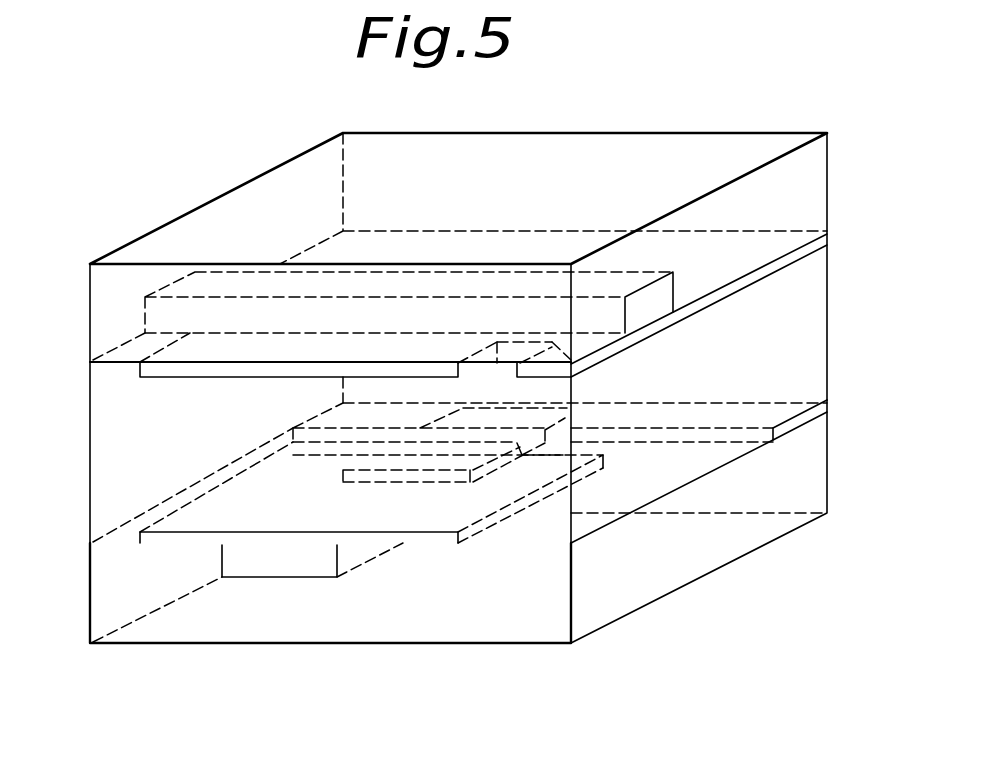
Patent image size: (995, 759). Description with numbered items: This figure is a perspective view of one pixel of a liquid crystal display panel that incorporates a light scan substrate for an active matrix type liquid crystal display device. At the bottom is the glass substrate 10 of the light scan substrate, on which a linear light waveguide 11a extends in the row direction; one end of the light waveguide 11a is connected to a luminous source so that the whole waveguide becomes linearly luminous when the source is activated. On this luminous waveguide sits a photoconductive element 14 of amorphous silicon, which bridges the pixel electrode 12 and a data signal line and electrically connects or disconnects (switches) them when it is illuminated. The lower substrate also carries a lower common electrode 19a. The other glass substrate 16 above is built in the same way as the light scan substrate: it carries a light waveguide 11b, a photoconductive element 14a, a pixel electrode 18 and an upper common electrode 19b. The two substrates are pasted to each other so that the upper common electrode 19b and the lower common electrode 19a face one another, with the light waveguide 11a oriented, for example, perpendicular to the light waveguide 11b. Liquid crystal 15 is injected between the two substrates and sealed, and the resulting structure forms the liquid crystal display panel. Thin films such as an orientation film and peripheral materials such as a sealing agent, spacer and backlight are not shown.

The glass substrate 10 is at (660, 575).
The light waveguide 11a is at (272, 563).
The light waveguide 11b is at (657, 302).
The pixel electrode 12 is at (200, 510).
The photoconductive element 14 is at (573, 408).
The photoconductive element 14a is at (580, 362).
The liquid crystal 15 is at (97, 503).
The glass substrate 16 is at (810, 178).
The pixel electrode 18 is at (146, 372).
The lower common electrode 19a is at (803, 418).
The upper common electrode 19b is at (785, 257).